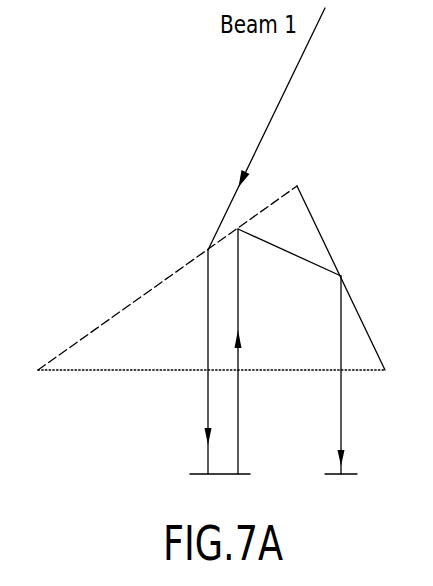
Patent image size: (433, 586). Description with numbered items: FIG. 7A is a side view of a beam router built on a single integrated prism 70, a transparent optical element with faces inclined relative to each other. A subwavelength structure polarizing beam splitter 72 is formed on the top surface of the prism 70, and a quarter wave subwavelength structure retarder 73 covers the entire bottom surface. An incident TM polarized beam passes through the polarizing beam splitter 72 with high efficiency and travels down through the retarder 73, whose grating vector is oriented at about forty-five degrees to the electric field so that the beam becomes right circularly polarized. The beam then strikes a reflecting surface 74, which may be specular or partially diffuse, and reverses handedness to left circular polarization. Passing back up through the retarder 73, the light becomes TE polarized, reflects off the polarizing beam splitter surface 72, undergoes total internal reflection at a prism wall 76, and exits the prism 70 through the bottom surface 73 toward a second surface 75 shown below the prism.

The prism 70 is at (231, 315).
The subwavelength structure polarizing beam splitter 72 is at (182, 266).
The subwavelength structure retarder 73 is at (176, 378).
The reflecting surface 74 is at (196, 474).
The second detector/target 75 is at (355, 475).
The prism wall 76 is at (364, 299).